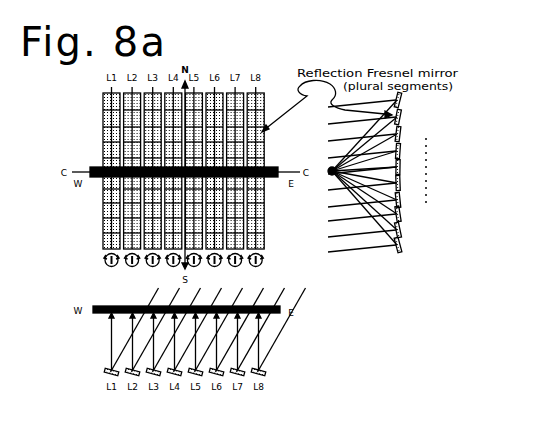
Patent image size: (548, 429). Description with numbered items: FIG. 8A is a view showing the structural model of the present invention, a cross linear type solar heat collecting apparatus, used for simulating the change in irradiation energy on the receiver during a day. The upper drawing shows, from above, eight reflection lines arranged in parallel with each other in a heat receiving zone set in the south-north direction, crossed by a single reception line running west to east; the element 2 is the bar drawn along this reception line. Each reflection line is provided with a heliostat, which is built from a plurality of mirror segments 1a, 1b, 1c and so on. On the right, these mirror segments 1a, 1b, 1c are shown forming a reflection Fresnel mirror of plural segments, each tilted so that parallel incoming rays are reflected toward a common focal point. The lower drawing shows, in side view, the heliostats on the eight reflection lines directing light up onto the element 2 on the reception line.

The light guide / receiving surface 2 is at (108, 165).
The mirror segment 1a is at (401, 245).
The mirror segment 1b is at (401, 229).
The mirror segment 1c is at (401, 213).